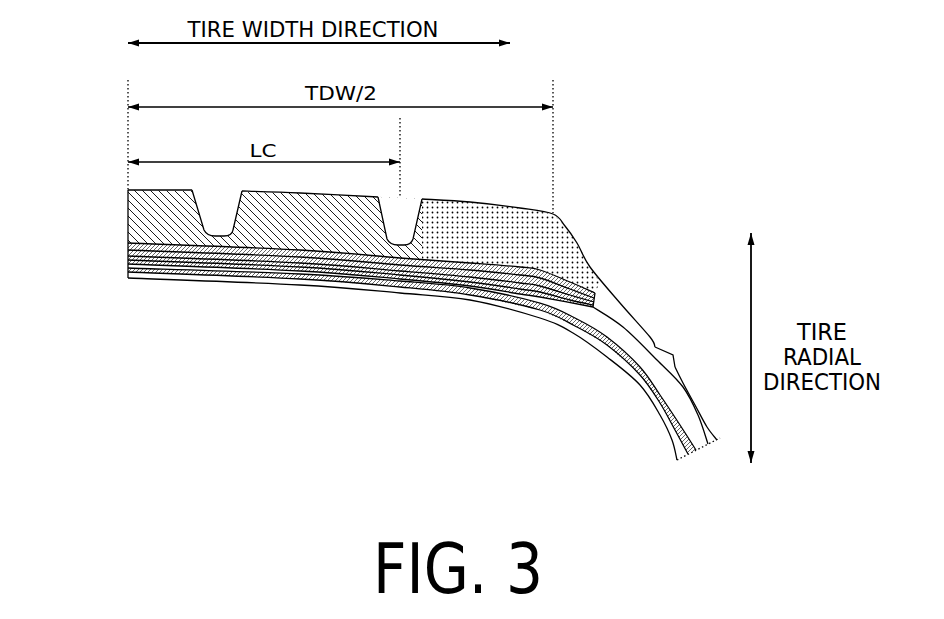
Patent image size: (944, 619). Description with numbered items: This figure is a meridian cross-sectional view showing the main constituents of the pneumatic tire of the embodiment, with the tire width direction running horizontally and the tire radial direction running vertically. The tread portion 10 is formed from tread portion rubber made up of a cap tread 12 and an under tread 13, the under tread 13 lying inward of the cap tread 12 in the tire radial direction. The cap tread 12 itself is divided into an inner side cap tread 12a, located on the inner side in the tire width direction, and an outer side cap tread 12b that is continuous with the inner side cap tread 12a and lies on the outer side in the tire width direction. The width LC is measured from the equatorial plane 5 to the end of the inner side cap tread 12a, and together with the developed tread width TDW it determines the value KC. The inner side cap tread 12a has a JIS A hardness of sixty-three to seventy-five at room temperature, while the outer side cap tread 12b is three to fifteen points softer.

The equatorial plane 5 is at (127, 133).
The tread portion 10 is at (67, 215).
The cap tread 12 is at (128, 234).
The inner side cap tread 12a is at (341, 190).
The outer side cap tread 12b is at (460, 200).
The under tread 13 is at (128, 248).